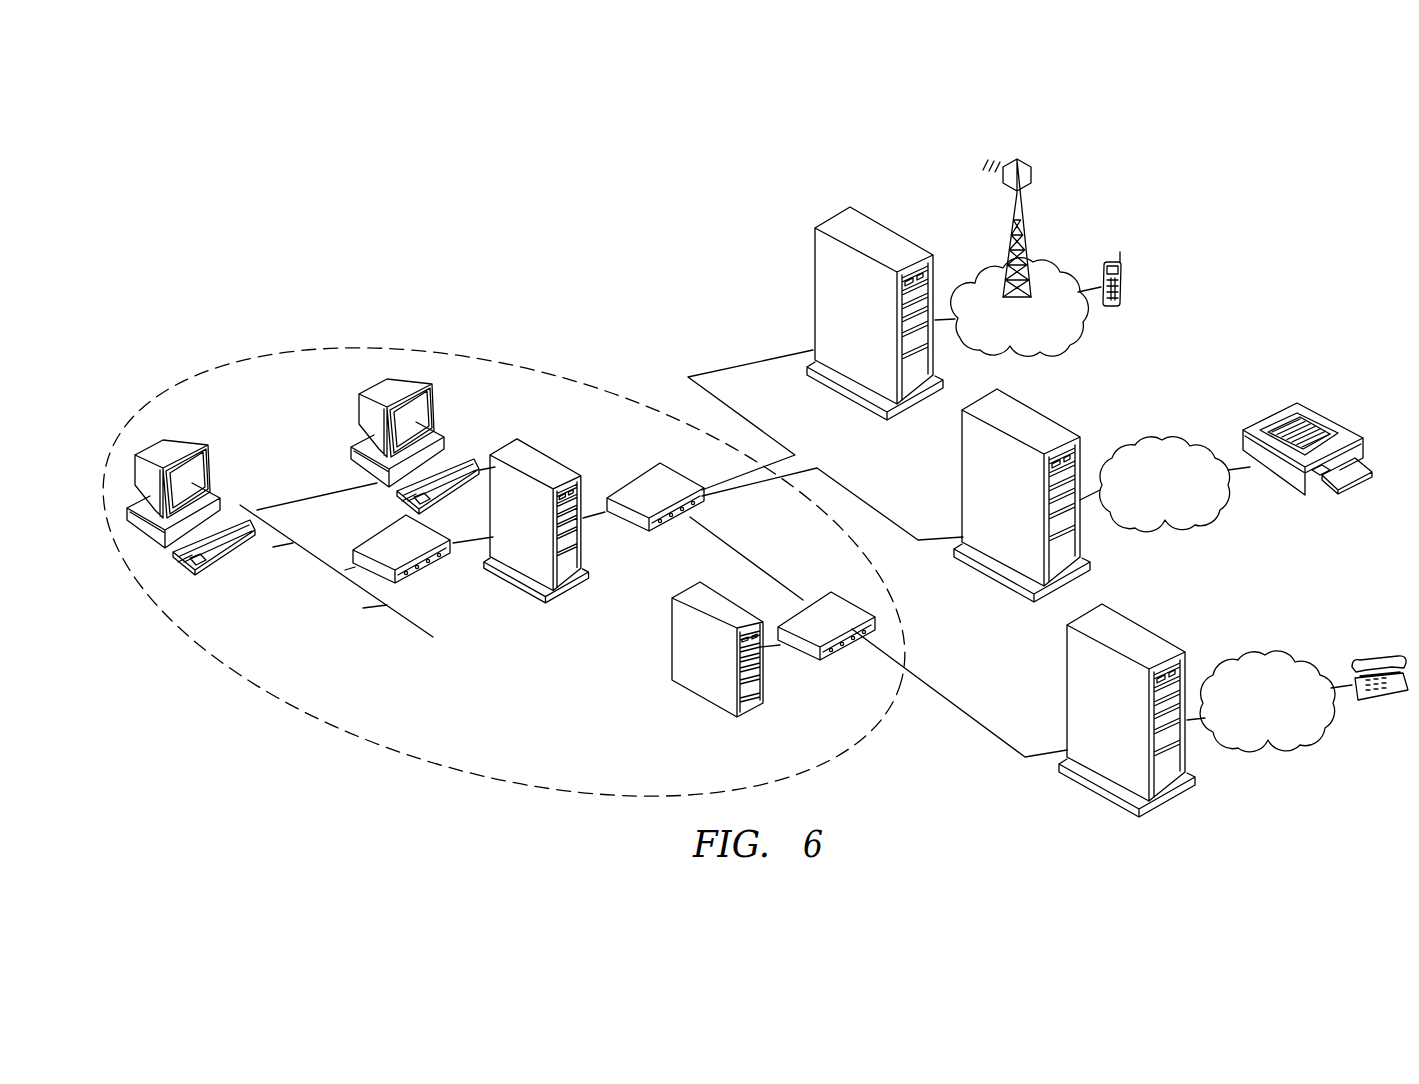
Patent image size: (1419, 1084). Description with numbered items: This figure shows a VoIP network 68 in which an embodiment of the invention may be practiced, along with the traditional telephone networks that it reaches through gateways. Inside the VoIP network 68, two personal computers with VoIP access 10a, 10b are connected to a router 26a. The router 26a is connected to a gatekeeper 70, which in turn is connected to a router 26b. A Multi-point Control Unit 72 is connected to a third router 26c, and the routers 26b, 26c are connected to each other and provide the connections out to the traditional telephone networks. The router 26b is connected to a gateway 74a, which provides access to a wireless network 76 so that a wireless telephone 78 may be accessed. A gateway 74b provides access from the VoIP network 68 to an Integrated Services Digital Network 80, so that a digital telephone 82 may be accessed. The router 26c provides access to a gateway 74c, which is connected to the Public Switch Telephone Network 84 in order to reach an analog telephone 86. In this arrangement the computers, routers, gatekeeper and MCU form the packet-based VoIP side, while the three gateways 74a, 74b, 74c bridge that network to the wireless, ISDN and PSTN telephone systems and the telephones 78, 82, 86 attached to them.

The VoIP network 68 is at (262, 351).
The personal computer with VoIP access 10a is at (208, 466).
The personal computer with VoIP access 10b is at (436, 404).
The router 26a is at (428, 577).
The router 26b is at (635, 476).
The router 26c is at (848, 653).
The gatekeeper 70 is at (570, 598).
The Multi-point Control Unit (MCU) 72 is at (750, 711).
The gateway 74a is at (883, 237).
The gateway 74b is at (1028, 420).
The gateway 74c is at (1168, 807).
The wireless network 76 is at (1057, 272).
The wireless telephone 78 is at (1123, 278).
The Integrated Services Digital Network (ISDN) 80 is at (1167, 438).
The digital telephone 82 is at (1330, 418).
The Public Switch Telephone Network (PSTN) 84 is at (1300, 750).
The analog telephone 86 is at (1380, 705).